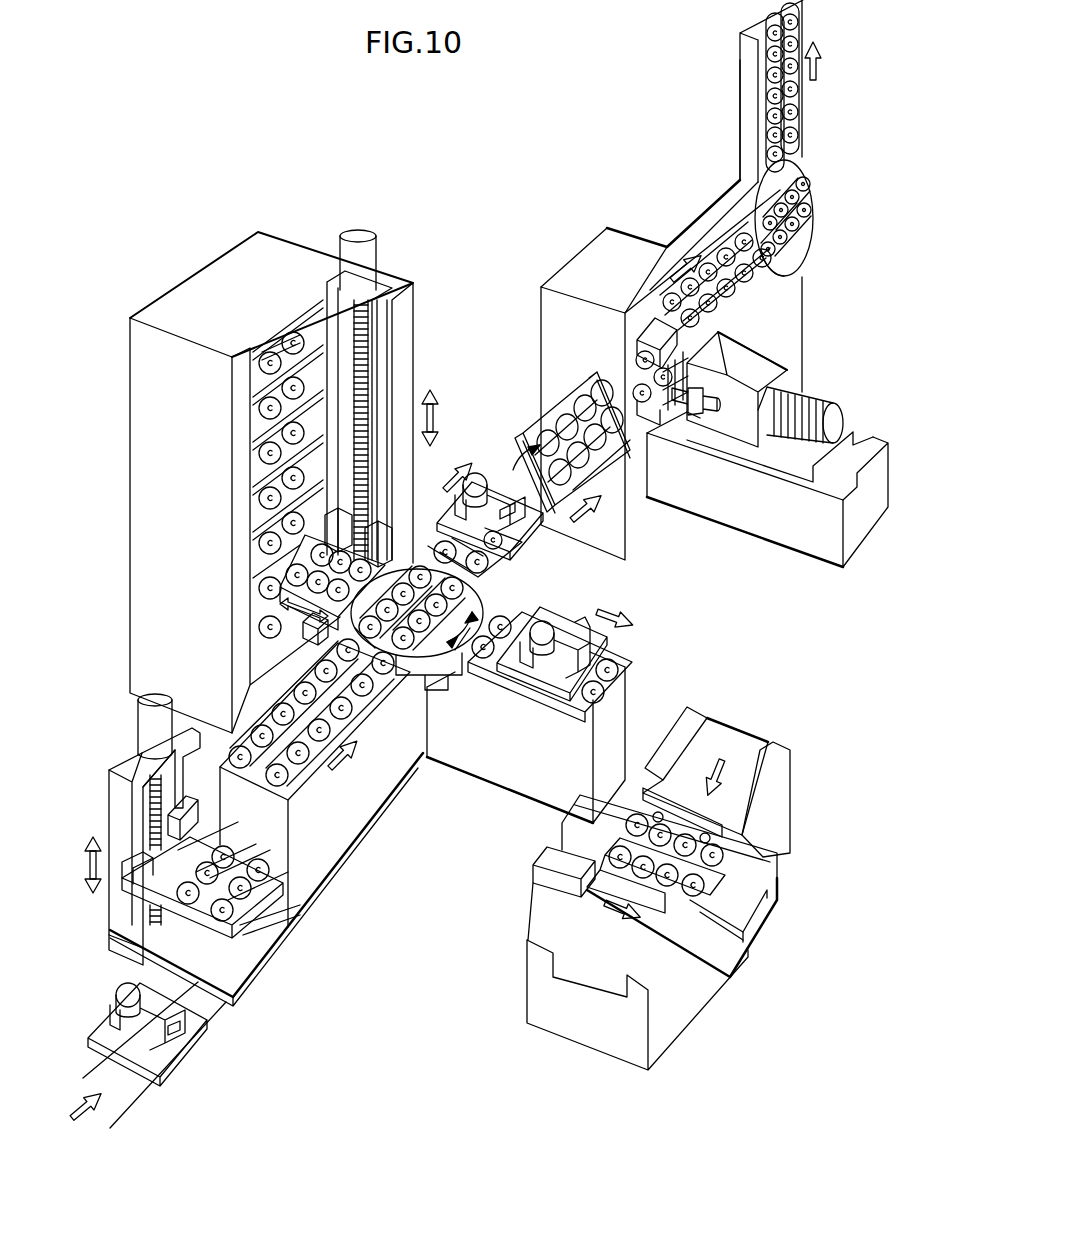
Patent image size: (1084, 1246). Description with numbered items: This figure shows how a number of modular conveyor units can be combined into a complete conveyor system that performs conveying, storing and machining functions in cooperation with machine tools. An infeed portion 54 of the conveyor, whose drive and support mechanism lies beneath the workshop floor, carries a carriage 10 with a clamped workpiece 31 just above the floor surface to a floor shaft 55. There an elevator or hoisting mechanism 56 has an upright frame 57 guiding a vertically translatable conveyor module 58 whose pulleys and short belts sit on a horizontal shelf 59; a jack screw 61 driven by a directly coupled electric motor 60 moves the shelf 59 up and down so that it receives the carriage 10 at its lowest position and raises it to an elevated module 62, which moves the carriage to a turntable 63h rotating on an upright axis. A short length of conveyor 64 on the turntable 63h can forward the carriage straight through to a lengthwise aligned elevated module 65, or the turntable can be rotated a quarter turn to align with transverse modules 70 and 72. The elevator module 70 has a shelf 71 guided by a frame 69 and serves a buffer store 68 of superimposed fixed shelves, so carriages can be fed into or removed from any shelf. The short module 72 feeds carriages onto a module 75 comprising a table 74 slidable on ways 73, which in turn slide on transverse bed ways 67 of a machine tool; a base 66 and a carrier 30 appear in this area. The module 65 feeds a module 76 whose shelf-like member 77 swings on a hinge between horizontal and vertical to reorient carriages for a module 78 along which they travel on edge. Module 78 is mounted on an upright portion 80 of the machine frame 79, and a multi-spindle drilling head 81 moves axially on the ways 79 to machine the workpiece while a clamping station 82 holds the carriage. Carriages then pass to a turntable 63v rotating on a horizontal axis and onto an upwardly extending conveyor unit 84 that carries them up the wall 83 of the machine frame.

The carriage 10 is at (184, 1072).
The carrier 30 is at (587, 885).
The workpiece 31 is at (150, 1000).
The infeed portion of the conveyor 54 is at (128, 1108).
The floor shaft 55 is at (243, 968).
The elevator or hoisting mechanism 56 is at (120, 752).
The upright frame 57 is at (113, 915).
The vertically translatable conveyor module 58 is at (282, 920).
The horizontal shelf 59 is at (275, 890).
The electric motor 60 is at (158, 693).
The jack screw 61 is at (165, 790).
The elevated conveyor module 62 is at (310, 787).
The turntable 63h is at (437, 668).
The turntable 63v is at (810, 239).
The short length of conveyor 64 is at (468, 603).
The elevated conveyor module 65 is at (503, 568).
The storage cabinet 66 is at (196, 551).
The transverse bed ways 67 is at (600, 1030).
The buffer store 68 is at (293, 340).
The frame 69 is at (422, 312).
The elevator module 70 is at (288, 591).
The shelf 71 is at (312, 642).
The short conveyor module 72 is at (632, 657).
The ways 73 is at (757, 877).
The table 74 is at (740, 852).
The short conveyor module 75 is at (690, 927).
The conveyor module 76 is at (572, 373).
The shelf-like member 77 is at (560, 400).
The conveyor module 78 is at (727, 243).
The machine tool frame 79 is at (776, 520).
The upright portion of the frame 80 is at (650, 303).
The multi-spindle drilling head 81 is at (777, 355).
The clamping station 82 is at (633, 317).
The wall of the machine frame 83 is at (735, 182).
The upwardly extending conveyor unit 84 is at (805, 120).